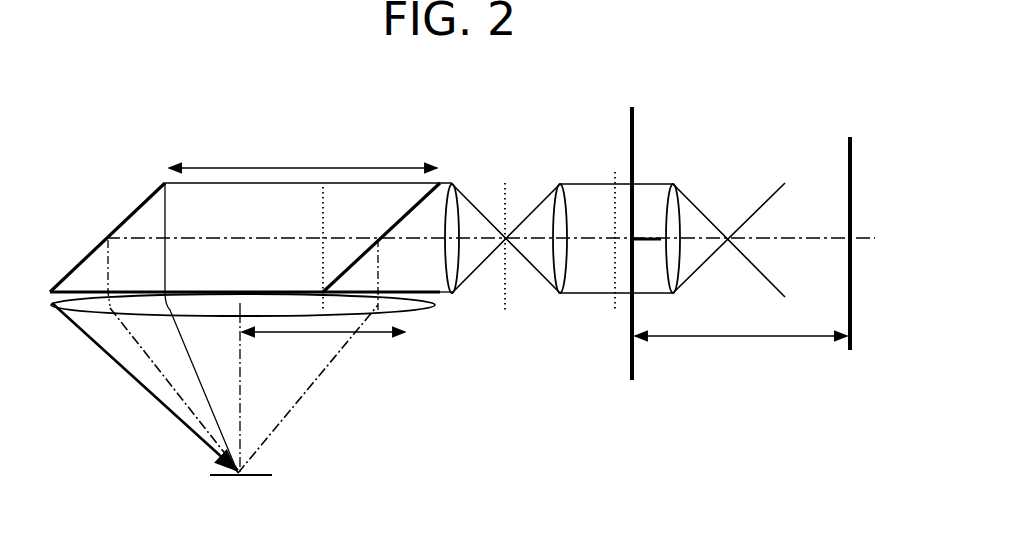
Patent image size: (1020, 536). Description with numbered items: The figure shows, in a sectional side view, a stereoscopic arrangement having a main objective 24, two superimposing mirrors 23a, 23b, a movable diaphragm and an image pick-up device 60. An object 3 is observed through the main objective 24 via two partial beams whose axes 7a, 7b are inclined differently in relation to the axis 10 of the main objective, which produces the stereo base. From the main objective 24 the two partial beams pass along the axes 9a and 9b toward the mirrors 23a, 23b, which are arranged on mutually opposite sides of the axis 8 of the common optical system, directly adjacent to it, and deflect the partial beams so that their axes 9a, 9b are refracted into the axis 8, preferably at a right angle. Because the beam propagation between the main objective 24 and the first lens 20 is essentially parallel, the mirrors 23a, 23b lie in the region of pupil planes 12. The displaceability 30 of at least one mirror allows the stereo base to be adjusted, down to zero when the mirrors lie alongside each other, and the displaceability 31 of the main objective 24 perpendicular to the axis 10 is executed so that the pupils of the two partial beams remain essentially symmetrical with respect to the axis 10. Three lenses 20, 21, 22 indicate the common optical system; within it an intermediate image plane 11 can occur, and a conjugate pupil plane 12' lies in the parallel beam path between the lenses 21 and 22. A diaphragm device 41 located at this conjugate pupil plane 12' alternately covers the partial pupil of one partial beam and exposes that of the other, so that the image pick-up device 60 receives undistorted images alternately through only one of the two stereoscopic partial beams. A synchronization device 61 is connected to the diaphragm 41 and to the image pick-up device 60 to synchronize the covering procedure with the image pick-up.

The object 3 is at (253, 476).
The axis of first partial beam 7a is at (147, 356).
The axis of second partial beam 7b is at (336, 358).
The axis of the common optical system 8 is at (244, 236).
The axis of first partial beam after main objective 9a is at (108, 242).
The axis of second partial beam after main objective 9b is at (378, 258).
The axis of the main objective 10 is at (240, 340).
The intermediate image plane 11 is at (505, 306).
The pupil plane 12 is at (303, 216).
The conjugate pupil plane 12' is at (598, 263).
The first lens 20 is at (451, 184).
The second lens 21 is at (560, 184).
The third lens 22 is at (673, 184).
The superimposing mirror 23a is at (136, 210).
The superimposing mirror 23b is at (410, 200).
The main objective 24 is at (68, 318).
The displaceability of mirror 30 is at (246, 165).
The displaceability of main objective 31 is at (380, 336).
The diaphragm device 41 is at (630, 105).
The image pick-up device 60 is at (855, 264).
The synchronization device 61 is at (741, 356).